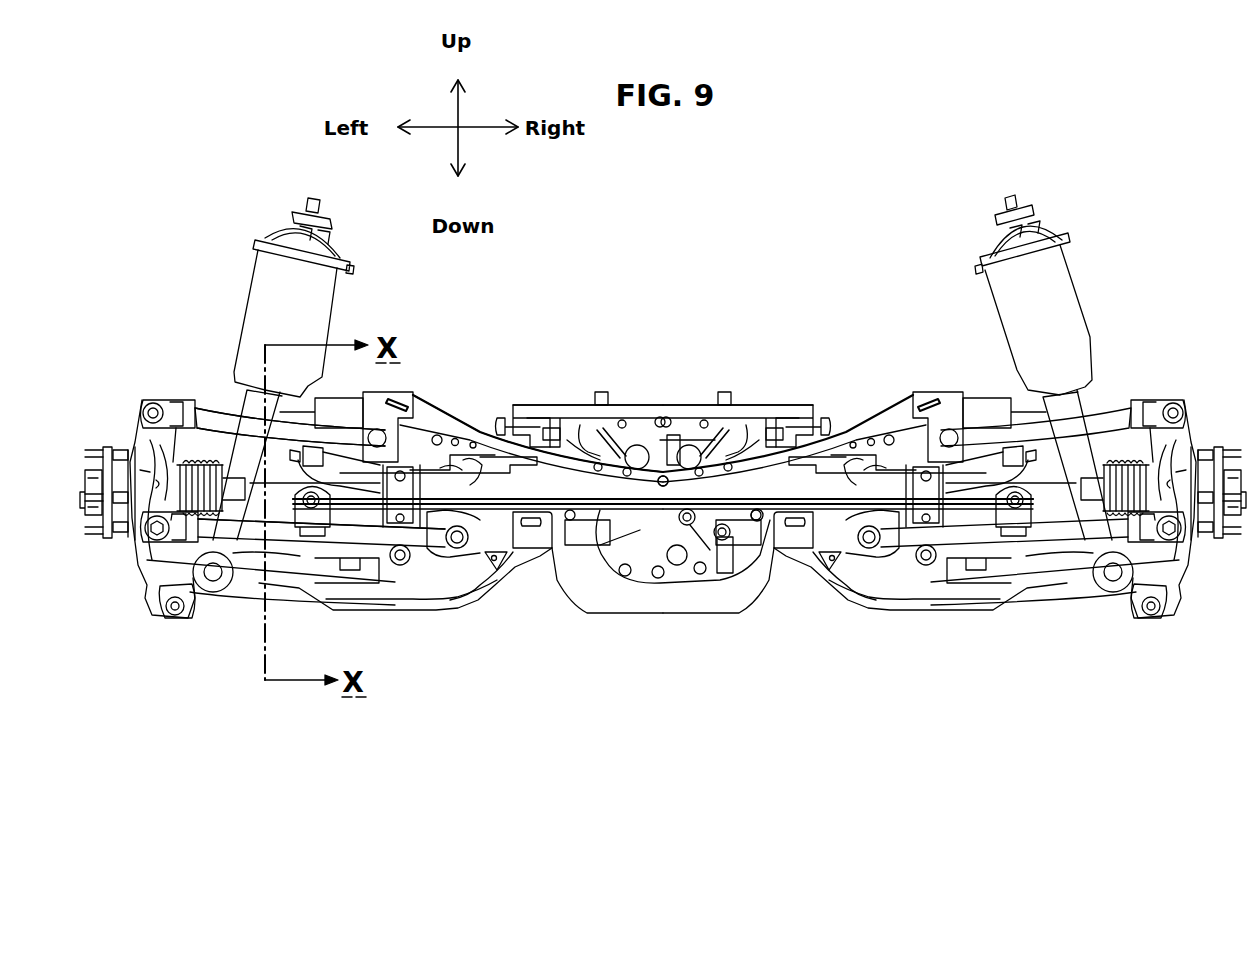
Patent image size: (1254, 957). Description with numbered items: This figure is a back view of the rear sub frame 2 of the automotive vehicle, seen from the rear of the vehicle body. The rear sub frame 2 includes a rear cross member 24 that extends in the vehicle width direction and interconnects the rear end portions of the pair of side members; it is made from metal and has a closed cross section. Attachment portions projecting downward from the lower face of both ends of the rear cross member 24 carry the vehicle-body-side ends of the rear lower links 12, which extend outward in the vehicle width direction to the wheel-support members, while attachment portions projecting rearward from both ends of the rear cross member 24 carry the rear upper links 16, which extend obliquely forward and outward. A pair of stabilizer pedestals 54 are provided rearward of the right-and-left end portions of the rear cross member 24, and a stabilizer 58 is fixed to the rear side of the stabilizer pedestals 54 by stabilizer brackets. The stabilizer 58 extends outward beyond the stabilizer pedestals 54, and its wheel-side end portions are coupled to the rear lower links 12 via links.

The rear sub frame 2 is at (437, 420).
The rear lower link 12 is at (358, 548).
The rear upper link 16 is at (218, 420).
The rear cross member 24 is at (578, 477).
The stabilizer pedestal 54 is at (401, 472).
The stabilizer 58 is at (639, 508).